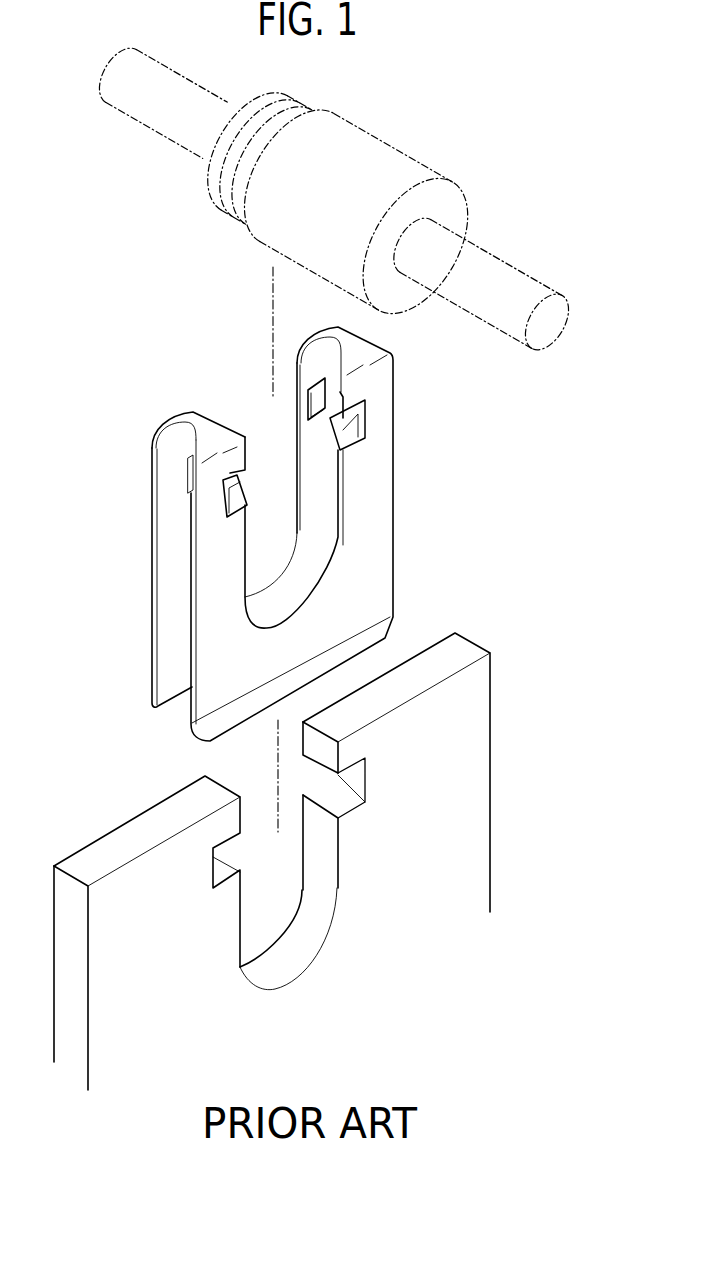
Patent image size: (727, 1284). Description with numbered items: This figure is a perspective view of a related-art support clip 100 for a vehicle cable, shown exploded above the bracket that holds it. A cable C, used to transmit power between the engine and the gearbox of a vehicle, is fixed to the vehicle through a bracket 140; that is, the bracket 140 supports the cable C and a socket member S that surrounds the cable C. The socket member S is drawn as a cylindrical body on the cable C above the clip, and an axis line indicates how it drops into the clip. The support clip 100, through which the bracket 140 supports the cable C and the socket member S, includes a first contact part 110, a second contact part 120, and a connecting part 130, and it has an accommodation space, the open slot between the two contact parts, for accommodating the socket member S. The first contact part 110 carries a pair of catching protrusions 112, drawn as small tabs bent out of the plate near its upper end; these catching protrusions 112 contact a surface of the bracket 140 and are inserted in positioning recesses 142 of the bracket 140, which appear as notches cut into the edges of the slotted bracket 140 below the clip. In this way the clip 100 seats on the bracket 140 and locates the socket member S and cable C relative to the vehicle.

The clip 100 is at (118, 406).
The first contact part 110 is at (332, 534).
The catching protrusions 112 is at (345, 427).
The second contact part 120 is at (147, 528).
The connecting part 130 is at (197, 417).
The bracket 140 is at (316, 861).
The positioning recesses 142 is at (355, 781).
The socket member S is at (402, 150).
The cable C is at (512, 267).